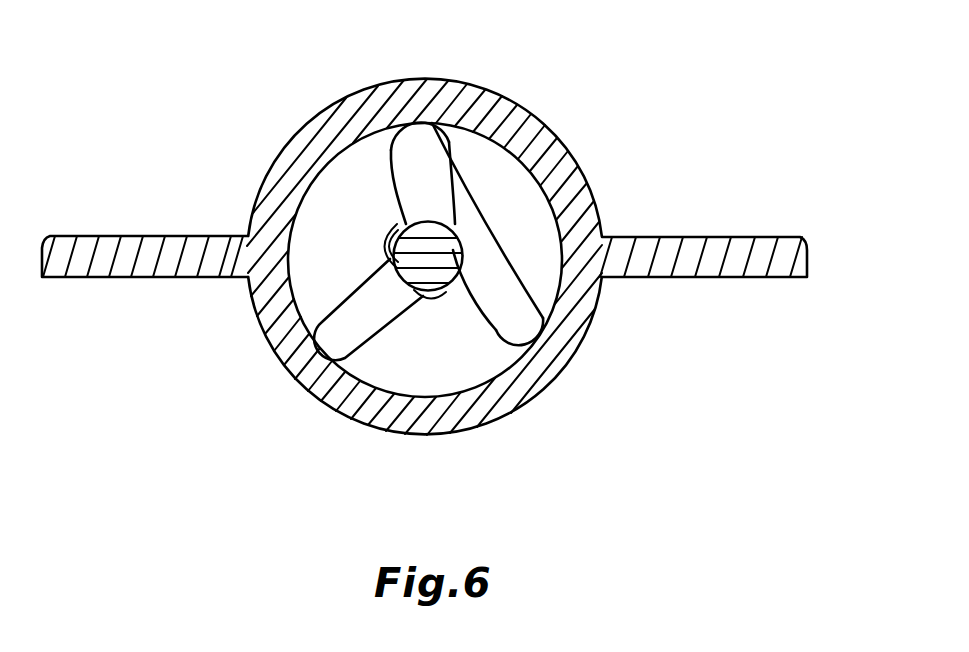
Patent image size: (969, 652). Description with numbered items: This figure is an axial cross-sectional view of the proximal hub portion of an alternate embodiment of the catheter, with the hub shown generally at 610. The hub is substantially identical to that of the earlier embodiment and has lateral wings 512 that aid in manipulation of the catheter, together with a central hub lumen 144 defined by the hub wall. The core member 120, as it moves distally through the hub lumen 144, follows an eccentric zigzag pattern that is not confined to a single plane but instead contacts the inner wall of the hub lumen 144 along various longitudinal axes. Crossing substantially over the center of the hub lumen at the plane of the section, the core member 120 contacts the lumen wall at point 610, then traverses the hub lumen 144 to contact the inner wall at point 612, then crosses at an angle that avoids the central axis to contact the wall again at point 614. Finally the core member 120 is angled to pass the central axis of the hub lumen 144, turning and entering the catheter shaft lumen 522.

The hub 610 is at (588, 100).
The contact point on hub lumen inner wall 612 is at (417, 118).
The core member 120 is at (423, 150).
The hub lumen 144 is at (515, 203).
The lateral wings 512 is at (118, 278).
The contact point on hub lumen inner wall 614 is at (535, 328).
The catheter shaft lumen 522 is at (433, 303).